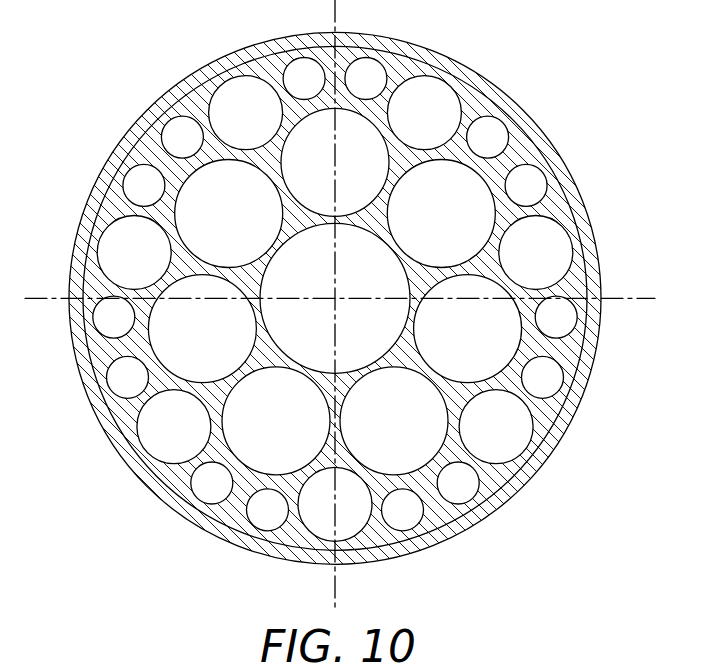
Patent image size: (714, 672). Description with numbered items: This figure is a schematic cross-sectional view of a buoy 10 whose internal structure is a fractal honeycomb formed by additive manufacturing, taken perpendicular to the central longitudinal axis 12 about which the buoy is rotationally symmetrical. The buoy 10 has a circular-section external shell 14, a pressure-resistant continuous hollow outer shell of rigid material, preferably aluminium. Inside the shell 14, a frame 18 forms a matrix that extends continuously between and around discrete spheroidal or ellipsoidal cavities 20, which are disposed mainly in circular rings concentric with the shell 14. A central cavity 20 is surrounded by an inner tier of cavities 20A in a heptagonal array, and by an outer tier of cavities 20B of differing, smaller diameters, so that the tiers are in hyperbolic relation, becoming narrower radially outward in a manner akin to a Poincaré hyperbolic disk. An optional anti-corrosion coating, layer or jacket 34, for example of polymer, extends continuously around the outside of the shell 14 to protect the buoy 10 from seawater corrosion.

The buoy 10 is at (70, 53).
The central longitudinal axis 12 is at (337, 300).
The external shell 14 is at (477, 100).
The frame 18 is at (272, 178).
The cavities 20 is at (310, 282).
The inner tier of cavities 20A is at (466, 222).
The outer tier of cavities 20B is at (550, 384).
The anti-corrosion coating, layer or jacket 34 is at (117, 438).